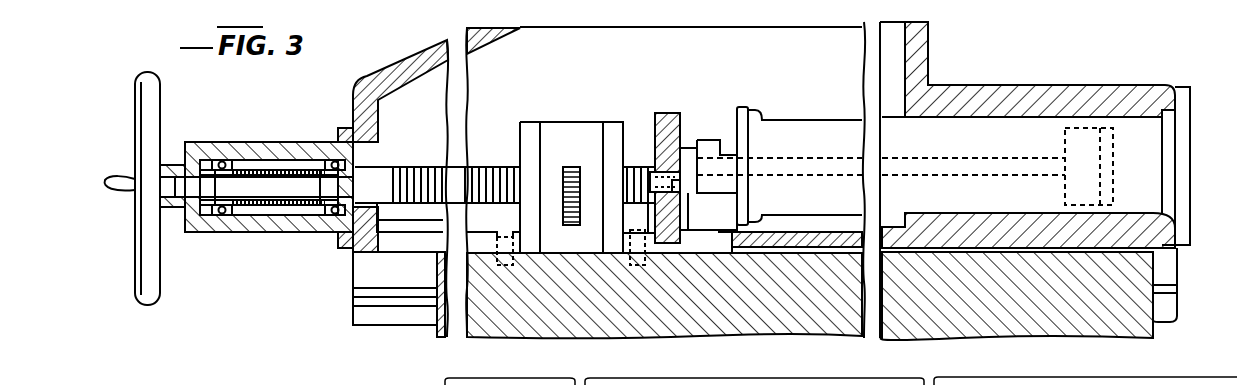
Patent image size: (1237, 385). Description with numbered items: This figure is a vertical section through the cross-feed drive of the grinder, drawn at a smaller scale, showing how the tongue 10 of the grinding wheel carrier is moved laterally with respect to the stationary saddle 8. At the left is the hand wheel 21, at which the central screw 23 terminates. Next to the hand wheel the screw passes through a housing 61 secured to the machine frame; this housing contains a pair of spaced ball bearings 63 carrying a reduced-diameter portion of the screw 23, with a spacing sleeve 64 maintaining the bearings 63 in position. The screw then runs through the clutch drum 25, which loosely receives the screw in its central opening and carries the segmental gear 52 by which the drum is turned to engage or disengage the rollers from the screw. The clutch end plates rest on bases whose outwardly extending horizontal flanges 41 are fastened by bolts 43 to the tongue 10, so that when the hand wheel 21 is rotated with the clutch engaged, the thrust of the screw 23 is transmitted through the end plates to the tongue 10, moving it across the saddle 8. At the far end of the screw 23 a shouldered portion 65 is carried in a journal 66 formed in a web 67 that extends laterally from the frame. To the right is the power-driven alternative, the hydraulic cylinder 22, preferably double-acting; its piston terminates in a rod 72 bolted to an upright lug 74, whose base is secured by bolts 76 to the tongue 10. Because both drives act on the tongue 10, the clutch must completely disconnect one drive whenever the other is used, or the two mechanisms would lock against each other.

The saddle 8 is at (1173, 262).
The tongue 10 is at (477, 277).
The hand wheel 21 is at (161, 108).
The hydraulic cylinder 22 is at (1086, 160).
The central screw 23 is at (497, 170).
The drum 25 is at (555, 125).
The horizontal flange 41 is at (623, 240).
The bolts 43 is at (505, 236).
The segmental gear 52 is at (573, 167).
The housing 61 is at (292, 230).
The ball bearings 63 is at (325, 147).
The spacing sleeve 64 is at (248, 215).
The shouldered portion 65 is at (678, 191).
The journal 66 is at (665, 174).
The web 67 is at (670, 132).
The rod 72 is at (692, 172).
The upright lug 74 is at (687, 150).
The bolts 76 is at (722, 224).